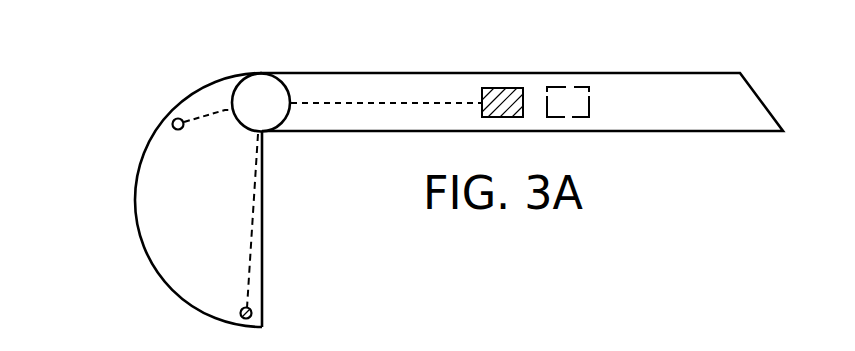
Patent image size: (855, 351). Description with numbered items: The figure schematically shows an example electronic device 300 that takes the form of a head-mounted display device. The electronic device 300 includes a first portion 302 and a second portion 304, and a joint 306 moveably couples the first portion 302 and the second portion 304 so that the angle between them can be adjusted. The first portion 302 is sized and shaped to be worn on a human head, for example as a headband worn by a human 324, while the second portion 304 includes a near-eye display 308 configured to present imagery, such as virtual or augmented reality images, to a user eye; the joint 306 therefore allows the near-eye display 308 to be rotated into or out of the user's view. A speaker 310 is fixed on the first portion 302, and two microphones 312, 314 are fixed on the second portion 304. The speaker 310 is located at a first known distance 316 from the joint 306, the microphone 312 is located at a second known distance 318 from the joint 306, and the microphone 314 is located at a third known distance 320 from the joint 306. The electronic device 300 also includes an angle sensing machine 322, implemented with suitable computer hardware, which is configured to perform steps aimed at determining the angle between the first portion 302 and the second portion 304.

The electronic device 300 is at (150, 42).
The first portion 302 is at (587, 73).
The second portion 304 is at (181, 300).
The joint 306 is at (262, 72).
The near-eye display 308 is at (290, 249).
The speaker 310 is at (501, 87).
The microphone 312 is at (170, 123).
The microphone 314 is at (238, 315).
The first known distance 316 is at (375, 102).
The second known distance 318 is at (215, 112).
The third known distance 320 is at (255, 207).
The angle sensing machine 322 is at (557, 86).
The human 324 is at (568, 350).